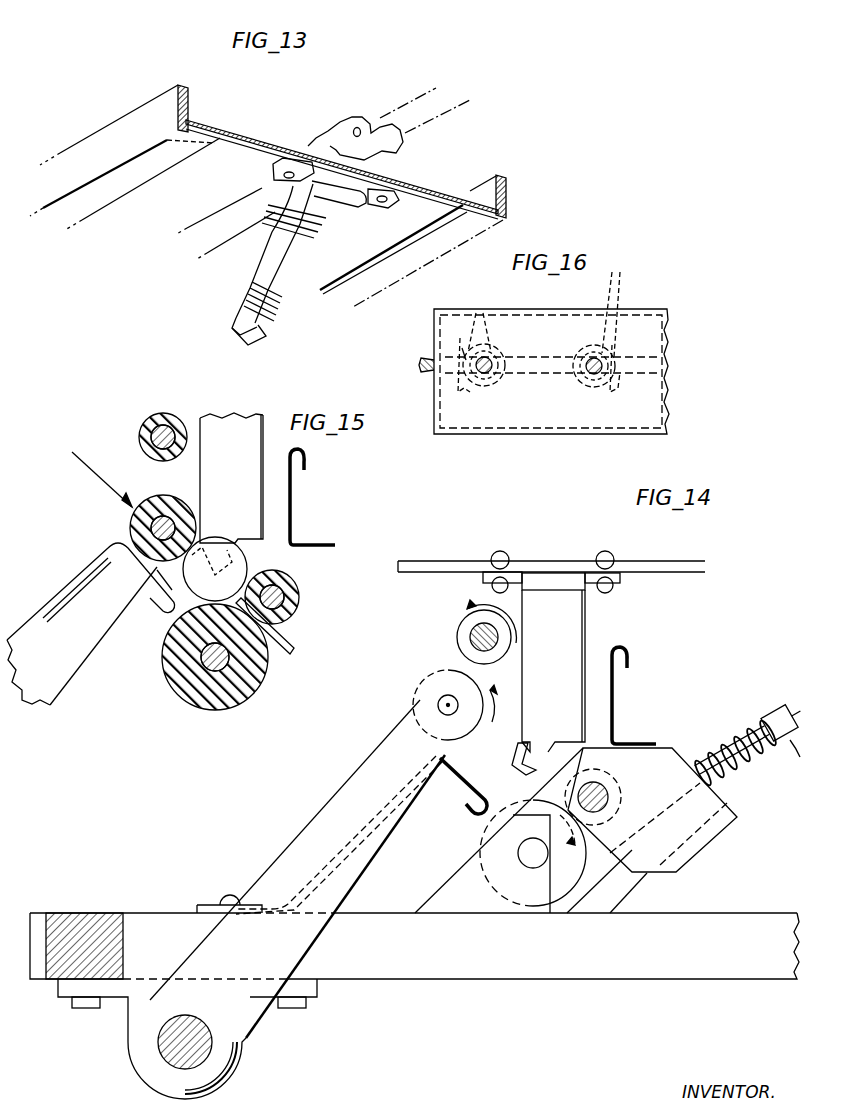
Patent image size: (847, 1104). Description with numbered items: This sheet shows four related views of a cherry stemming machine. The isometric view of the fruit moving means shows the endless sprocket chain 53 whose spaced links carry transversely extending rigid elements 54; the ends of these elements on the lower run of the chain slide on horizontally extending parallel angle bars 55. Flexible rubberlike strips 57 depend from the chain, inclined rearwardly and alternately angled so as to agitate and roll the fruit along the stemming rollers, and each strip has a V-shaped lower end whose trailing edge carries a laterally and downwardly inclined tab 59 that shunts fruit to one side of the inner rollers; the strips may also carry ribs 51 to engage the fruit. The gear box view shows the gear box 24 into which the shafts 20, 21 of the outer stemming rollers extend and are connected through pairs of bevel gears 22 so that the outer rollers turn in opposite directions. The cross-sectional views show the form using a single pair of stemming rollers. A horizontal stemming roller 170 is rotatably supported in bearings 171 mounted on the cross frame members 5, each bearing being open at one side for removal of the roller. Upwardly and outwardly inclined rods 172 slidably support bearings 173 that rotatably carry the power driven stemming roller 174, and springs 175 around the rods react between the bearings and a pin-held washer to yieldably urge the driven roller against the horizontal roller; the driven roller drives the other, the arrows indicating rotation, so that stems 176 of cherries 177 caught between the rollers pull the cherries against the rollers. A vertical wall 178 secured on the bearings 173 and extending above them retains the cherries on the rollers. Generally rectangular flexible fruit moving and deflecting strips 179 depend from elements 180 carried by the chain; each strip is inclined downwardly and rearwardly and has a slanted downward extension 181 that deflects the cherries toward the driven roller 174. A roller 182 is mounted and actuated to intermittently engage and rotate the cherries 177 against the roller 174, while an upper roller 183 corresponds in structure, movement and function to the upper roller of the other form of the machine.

In FIG. 14, the cross frame members 5 is at (402, 949).
In FIG. 16, the shaft 20 is at (487, 380).
In FIG. 16, the shaft 21 is at (594, 382).
In FIG. 16, the bevel gears 22 is at (481, 306).
In FIG. 16, the gear box 24 is at (648, 309).
In FIG. 13, the ribs 51 is at (275, 305).
In FIG. 13, the endless sprocket chain 53 is at (352, 116).
In FIG. 13, the rigid elements 54 is at (420, 190).
In FIG. 13, the angle bars 55 is at (143, 112).
In FIG. 13, the flexible strips 57 is at (298, 262).
In FIG. 13, the tab 59 is at (250, 340).
In FIG. 15, the stemming roller 170 is at (242, 712).
In FIG. 14, the stemming roller 170 is at (560, 913).
In FIG. 14, the bearings 171 is at (462, 875).
In FIG. 14, the rods 172 is at (636, 878).
In FIG. 14, the bearings 173 is at (678, 760).
In FIG. 15, the power driven stemming roller 174 is at (300, 604).
In FIG. 14, the power driven stemming roller 174 is at (565, 795).
In FIG. 14, the springs 175 is at (752, 786).
In FIG. 15, the stems 176 is at (292, 646).
In FIG. 15, the cherries 177 is at (246, 567).
In FIG. 15, the wall 178 is at (296, 508).
In FIG. 14, the wall 178 is at (616, 710).
In FIG. 15, the flexible fruit moving and deflecting strips 179 is at (244, 467).
In FIG. 14, the flexible fruit moving and deflecting strips 179 is at (572, 644).
In FIG. 14, the elements 180 is at (675, 566).
In FIG. 15, the downward extension 181 is at (226, 540).
In FIG. 14, the downward extension 181 is at (513, 760).
In FIG. 15, the roller 182 is at (132, 522).
In FIG. 14, the roller 182 is at (416, 698).
In FIG. 15, the upper roller 183 is at (154, 418).
In FIG. 14, the upper roller 183 is at (470, 620).